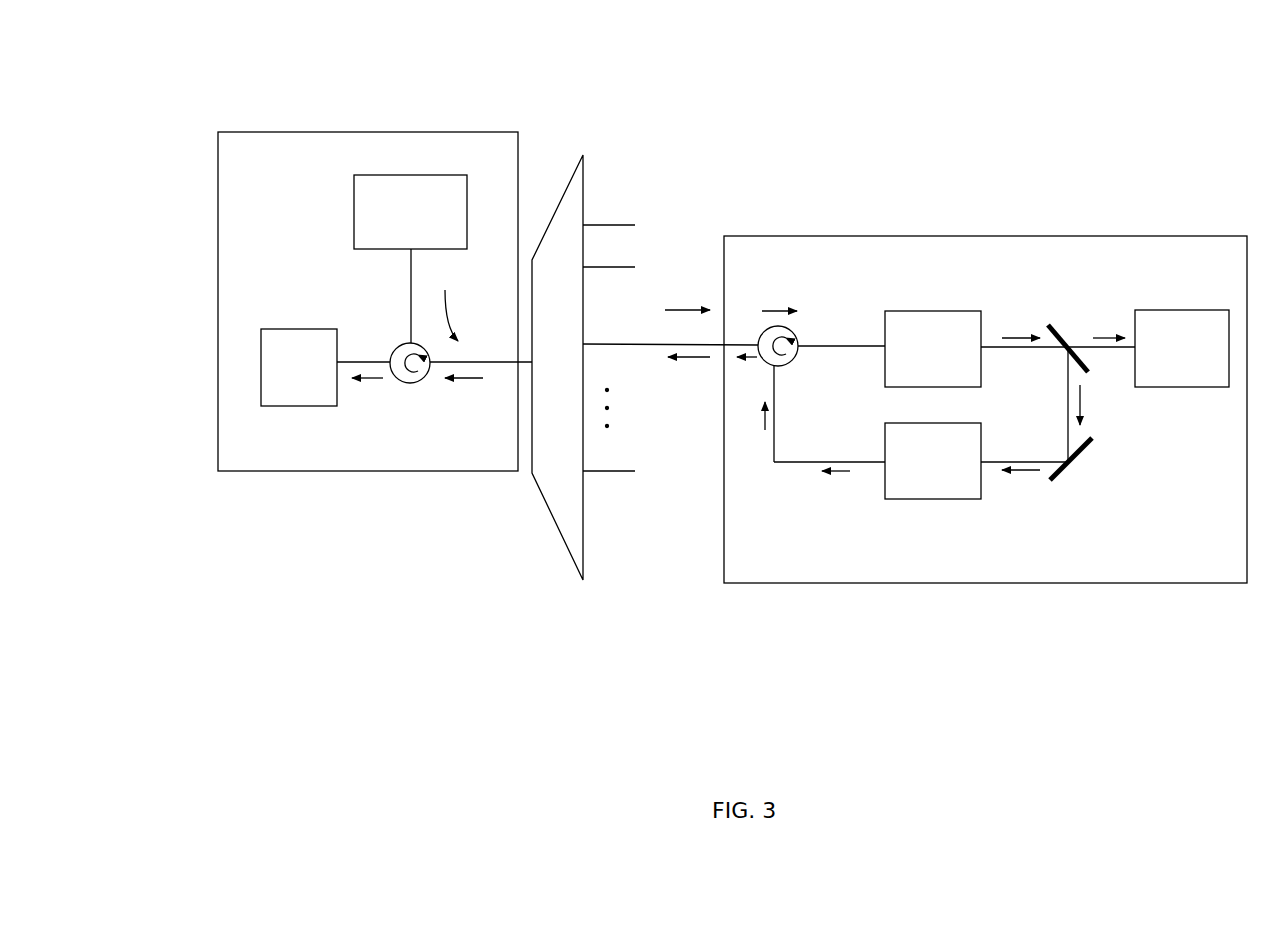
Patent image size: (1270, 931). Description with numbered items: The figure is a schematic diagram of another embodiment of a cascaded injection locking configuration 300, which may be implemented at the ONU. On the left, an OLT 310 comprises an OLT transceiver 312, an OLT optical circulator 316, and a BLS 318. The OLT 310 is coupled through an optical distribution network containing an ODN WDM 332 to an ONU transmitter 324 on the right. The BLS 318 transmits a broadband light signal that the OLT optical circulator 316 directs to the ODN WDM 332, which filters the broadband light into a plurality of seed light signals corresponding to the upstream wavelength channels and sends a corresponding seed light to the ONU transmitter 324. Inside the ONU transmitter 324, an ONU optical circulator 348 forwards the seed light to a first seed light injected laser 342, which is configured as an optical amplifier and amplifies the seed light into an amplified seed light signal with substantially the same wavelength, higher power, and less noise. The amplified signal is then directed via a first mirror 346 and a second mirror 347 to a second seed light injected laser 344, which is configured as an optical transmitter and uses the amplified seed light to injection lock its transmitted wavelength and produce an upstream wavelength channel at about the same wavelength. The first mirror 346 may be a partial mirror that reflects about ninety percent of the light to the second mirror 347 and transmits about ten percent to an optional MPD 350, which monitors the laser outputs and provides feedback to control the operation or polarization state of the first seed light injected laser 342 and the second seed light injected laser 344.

The cascaded injection locking configuration 300 is at (353, 597).
The OLT 310 is at (368, 132).
The OLT transceiver 312 is at (297, 407).
The OLT optical circulator 316 is at (421, 381).
The BLS 318 is at (354, 212).
The ONU transmitter 324 is at (988, 583).
The ODN WDM 332 is at (553, 523).
The first seed light injected laser 342 is at (928, 310).
The second seed light injected laser 344 is at (957, 500).
The first mirror 346 is at (1068, 325).
The second mirror 347 is at (1060, 482).
The ONU optical circulator 348 is at (790, 366).
The monitoring photodiode/photodetector (MPD) 350 is at (1172, 310).